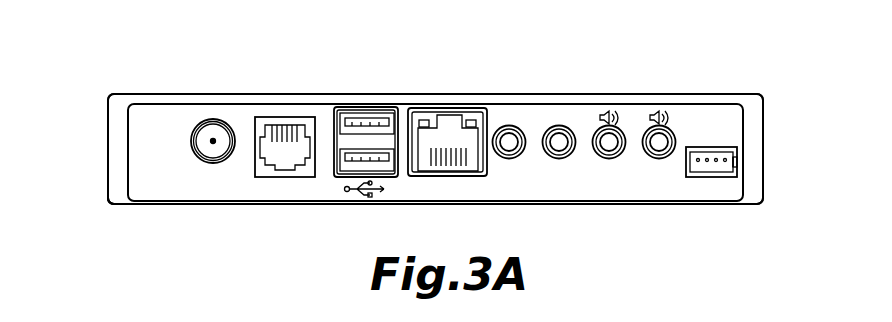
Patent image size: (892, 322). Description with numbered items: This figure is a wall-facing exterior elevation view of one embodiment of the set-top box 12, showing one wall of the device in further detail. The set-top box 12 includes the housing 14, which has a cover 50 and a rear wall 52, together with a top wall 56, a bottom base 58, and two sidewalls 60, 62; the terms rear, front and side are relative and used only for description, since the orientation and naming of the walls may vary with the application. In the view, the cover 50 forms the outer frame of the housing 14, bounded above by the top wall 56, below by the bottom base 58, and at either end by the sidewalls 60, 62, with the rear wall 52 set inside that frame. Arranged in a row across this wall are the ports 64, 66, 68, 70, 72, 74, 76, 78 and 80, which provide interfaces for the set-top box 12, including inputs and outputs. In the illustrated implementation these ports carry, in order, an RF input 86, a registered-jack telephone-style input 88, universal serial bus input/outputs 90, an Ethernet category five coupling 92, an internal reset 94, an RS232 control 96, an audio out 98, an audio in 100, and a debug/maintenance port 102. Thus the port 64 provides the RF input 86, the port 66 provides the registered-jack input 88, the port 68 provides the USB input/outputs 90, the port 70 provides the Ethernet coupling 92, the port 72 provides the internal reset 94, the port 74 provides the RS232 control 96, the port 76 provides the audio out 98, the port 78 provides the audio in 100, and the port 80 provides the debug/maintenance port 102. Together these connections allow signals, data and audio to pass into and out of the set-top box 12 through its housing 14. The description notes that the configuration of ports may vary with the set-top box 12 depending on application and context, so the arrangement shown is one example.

The set-top box 12 is at (112, 76).
The housing 14 is at (112, 206).
The cover 50 is at (745, 94).
The rear wall 52 is at (148, 192).
The top wall 56 is at (183, 94).
The bottom base 58 is at (303, 206).
The sidewall 60 is at (763, 138).
The sidewall 62 is at (108, 140).
The port 64 is at (214, 119).
The port 66 is at (287, 117).
The port 68 is at (370, 107).
The port 70 is at (450, 108).
The port 72 is at (510, 126).
The port 74 is at (562, 126).
The port 76 is at (613, 126).
The port 78 is at (664, 126).
The port 80 is at (711, 173).
The RF input 86 is at (213, 163).
The RJ-45 input 88 is at (265, 178).
The universal serial bus (USB) input/outputs 90 is at (357, 178).
The Ethernet category 5 (Cat 5) coupling 92 is at (449, 177).
The internal reset 94 is at (509, 160).
The RS232 control 96 is at (559, 160).
The audio out 98 is at (609, 160).
The audio in 100 is at (659, 160).
The debug/maintenance port 102 is at (737, 164).